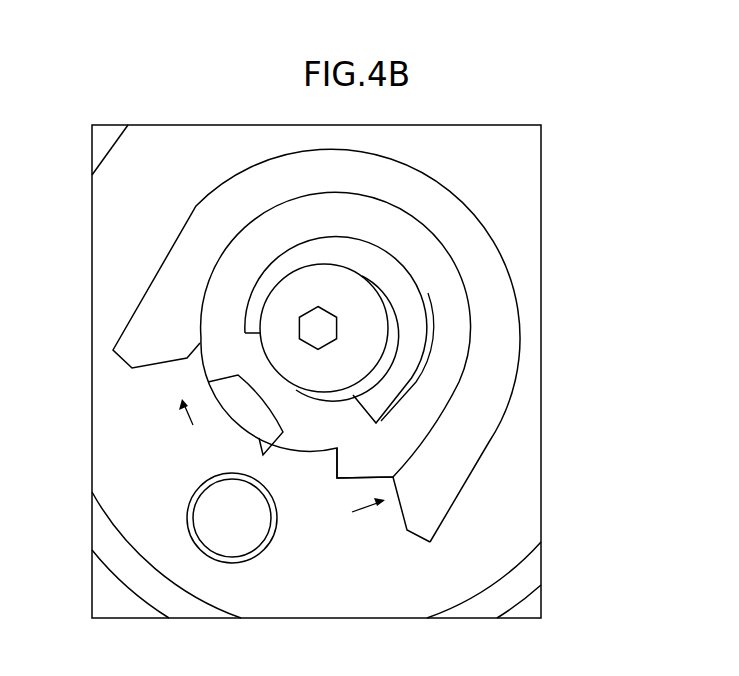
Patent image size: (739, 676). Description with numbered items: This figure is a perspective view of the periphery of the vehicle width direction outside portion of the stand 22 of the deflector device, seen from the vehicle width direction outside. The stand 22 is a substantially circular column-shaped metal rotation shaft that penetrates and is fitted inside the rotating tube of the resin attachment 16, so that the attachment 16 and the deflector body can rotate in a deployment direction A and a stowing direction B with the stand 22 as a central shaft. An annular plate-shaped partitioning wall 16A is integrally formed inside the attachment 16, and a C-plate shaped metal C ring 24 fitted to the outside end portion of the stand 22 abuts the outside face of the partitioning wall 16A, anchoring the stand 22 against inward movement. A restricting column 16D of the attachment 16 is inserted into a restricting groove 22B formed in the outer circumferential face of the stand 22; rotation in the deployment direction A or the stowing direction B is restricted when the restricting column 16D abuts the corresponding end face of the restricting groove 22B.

The attachment 16 is at (378, 371).
The partitioning wall 16A is at (520, 516).
The restricting column 16D is at (275, 442).
The stand 22 is at (433, 228).
The restricting groove 22B is at (334, 473).
The C ring 24 is at (203, 210).
The deployment direction A is at (362, 512).
The stowing direction B is at (191, 426).